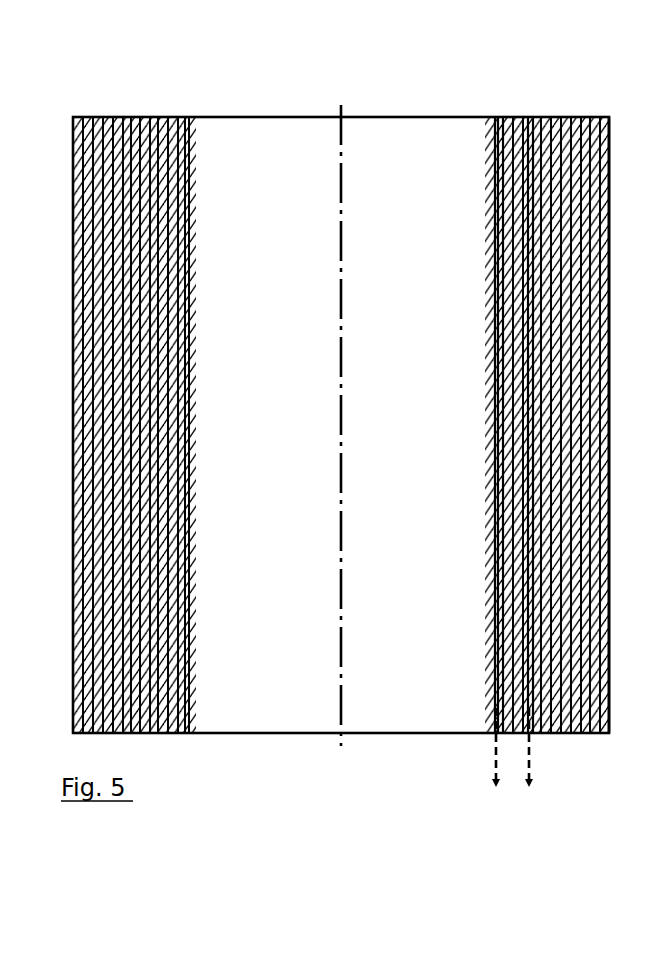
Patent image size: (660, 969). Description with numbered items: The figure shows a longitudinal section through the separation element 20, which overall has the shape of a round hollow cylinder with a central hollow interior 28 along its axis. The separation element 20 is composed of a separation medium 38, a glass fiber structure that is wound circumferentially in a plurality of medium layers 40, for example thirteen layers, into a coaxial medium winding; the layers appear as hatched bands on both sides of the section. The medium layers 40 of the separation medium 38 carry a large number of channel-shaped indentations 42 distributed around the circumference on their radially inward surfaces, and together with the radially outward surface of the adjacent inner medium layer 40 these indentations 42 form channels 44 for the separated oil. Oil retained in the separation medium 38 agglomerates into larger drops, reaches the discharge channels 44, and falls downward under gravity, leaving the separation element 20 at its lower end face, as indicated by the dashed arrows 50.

The separation element 20 is at (65, 106).
The core / central region 28 is at (247, 359).
The separation medium 38 is at (594, 557).
The medium layers 40 is at (118, 114).
The channel-shaped indentations 42 is at (487, 277).
The channels 44 is at (490, 337).
The dashed arrows 50 is at (487, 755).